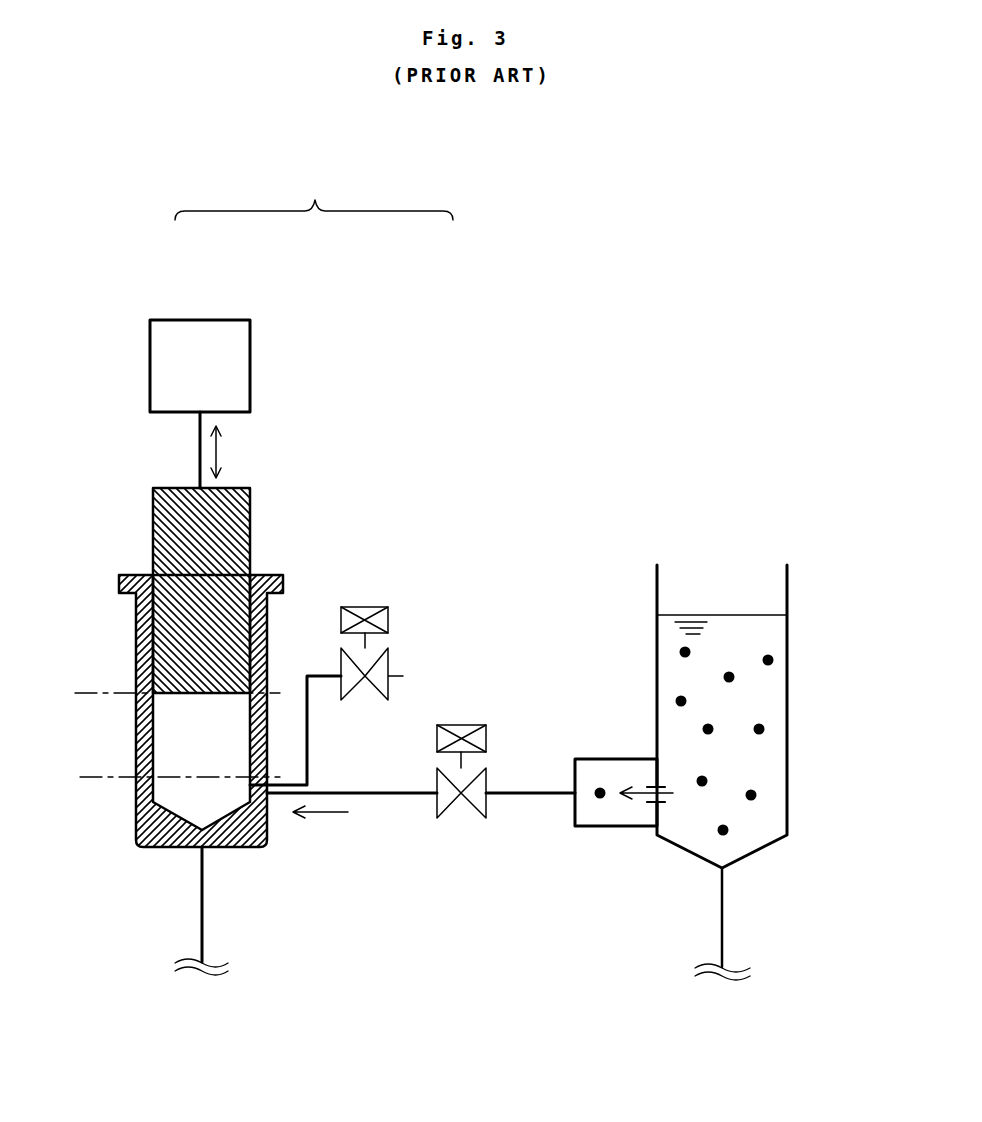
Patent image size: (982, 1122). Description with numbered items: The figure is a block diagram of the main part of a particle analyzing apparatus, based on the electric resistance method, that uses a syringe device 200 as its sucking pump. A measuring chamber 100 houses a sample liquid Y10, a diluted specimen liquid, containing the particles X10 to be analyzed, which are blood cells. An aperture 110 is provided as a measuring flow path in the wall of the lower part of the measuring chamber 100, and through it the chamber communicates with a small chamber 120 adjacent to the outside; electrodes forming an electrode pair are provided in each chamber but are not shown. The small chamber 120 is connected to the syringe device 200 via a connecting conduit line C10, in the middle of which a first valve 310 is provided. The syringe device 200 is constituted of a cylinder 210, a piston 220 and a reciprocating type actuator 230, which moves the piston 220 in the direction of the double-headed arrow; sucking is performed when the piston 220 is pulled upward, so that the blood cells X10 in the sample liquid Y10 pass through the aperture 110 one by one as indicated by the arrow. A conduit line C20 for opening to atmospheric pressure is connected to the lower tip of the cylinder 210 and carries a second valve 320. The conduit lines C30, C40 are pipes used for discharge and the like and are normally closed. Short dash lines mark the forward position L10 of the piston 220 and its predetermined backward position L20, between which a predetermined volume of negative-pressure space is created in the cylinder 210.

The measuring chamber 100 is at (655, 585).
The aperture 110 is at (655, 782).
The small chamber 120 is at (598, 762).
The syringe device 200 is at (314, 194).
The cylinder 210 is at (267, 623).
The piston 220 is at (250, 513).
The reciprocating type actuator 230 is at (199, 330).
The first valve 310 is at (461, 725).
The second valve 320 is at (367, 607).
The connecting conduit line C10 is at (404, 795).
The conduit line for opening the atmospheric pressure C20 is at (307, 745).
The conduit line C30 is at (722, 893).
The conduit line C40 is at (203, 888).
The forward position L10 is at (87, 777).
The backward position L20 is at (83, 693).
The particle X10 is at (577, 887).
The sample liquid Y10 is at (730, 635).